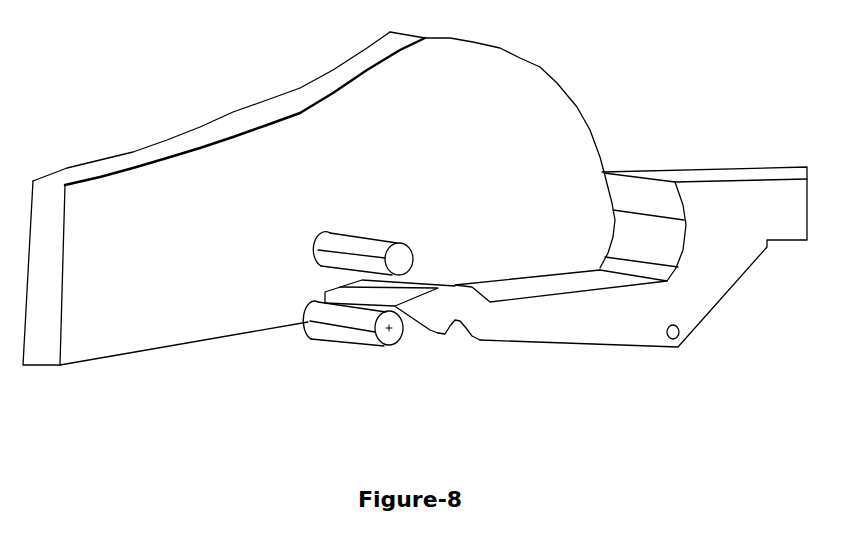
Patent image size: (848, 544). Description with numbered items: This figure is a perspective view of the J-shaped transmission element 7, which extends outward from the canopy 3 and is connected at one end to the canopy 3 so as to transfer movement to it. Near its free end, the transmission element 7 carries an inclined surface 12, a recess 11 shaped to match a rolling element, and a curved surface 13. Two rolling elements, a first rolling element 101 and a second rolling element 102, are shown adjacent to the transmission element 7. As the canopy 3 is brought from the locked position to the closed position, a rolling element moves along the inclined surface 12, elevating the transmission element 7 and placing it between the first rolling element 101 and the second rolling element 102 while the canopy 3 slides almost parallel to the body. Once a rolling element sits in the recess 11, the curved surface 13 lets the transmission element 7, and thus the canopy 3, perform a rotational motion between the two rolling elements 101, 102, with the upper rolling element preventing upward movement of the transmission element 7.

The canopy 3 is at (288, 150).
The transmission element 7 is at (577, 328).
The recess 11 is at (459, 332).
The inclined surface 12 is at (427, 336).
The curved surface 13 is at (453, 283).
The first rolling element 101 is at (347, 334).
The second rolling element 102 is at (368, 242).